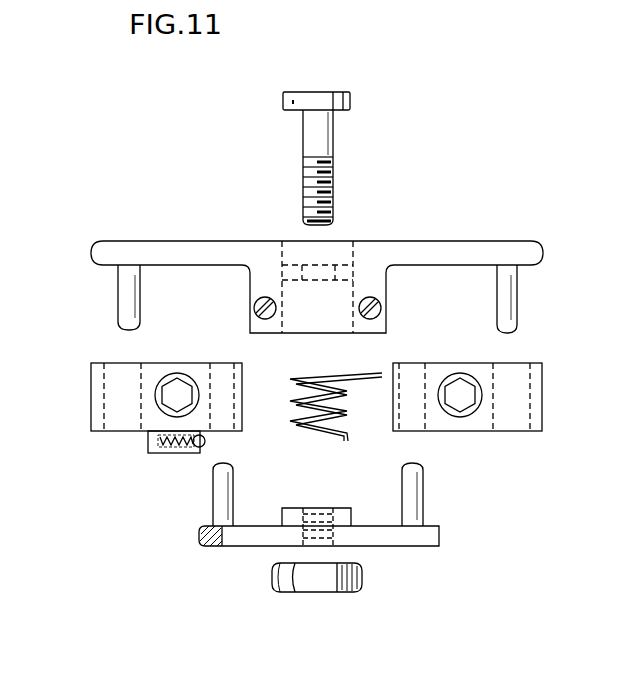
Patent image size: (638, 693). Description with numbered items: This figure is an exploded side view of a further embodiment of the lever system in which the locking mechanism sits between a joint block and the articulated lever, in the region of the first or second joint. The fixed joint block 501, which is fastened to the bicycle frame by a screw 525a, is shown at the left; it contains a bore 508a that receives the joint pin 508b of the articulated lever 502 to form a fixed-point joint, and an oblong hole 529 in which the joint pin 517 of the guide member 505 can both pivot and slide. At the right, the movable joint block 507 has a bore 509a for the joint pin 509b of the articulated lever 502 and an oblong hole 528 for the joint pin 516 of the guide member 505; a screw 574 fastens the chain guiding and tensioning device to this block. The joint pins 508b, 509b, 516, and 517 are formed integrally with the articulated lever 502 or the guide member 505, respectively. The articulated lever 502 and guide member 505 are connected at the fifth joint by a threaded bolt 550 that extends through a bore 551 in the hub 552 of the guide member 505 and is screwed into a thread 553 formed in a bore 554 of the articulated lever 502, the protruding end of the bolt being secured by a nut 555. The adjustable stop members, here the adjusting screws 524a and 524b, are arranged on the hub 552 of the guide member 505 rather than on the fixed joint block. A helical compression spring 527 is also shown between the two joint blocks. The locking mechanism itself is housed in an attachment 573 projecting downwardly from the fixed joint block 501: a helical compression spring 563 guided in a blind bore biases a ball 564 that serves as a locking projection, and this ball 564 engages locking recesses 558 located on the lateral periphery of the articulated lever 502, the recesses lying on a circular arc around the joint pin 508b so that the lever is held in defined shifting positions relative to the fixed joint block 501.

The threaded bolt 550 is at (326, 125).
The thread 553 is at (333, 195).
The guide member 505 is at (433, 250).
The joint pin 517 is at (118, 288).
The joint pin 516 is at (517, 301).
The hub 552 is at (250, 288).
The bore 551 is at (355, 291).
The adjusting screw 524a is at (255, 312).
The adjusting screw 524b is at (381, 310).
The fixed joint block 501 is at (97, 403).
The oblong hole 529 is at (115, 380).
The bore 508a is at (222, 365).
The screw 525a is at (178, 386).
The attachment 573 is at (157, 453).
The helical compression spring 563 is at (155, 441).
The ball 564 is at (206, 442).
The joint pin 508b is at (215, 492).
The helical compression spring 527 is at (312, 426).
The movable joint block 507 is at (542, 410).
The bore 509a is at (405, 408).
The oblong hole 528 is at (523, 381).
The screw 574 is at (462, 406).
The joint pin 509b is at (422, 490).
The articulated lever 502 is at (400, 546).
The locking recesses 558 is at (200, 535).
The bore 554 is at (318, 509).
The nut 555 is at (320, 592).